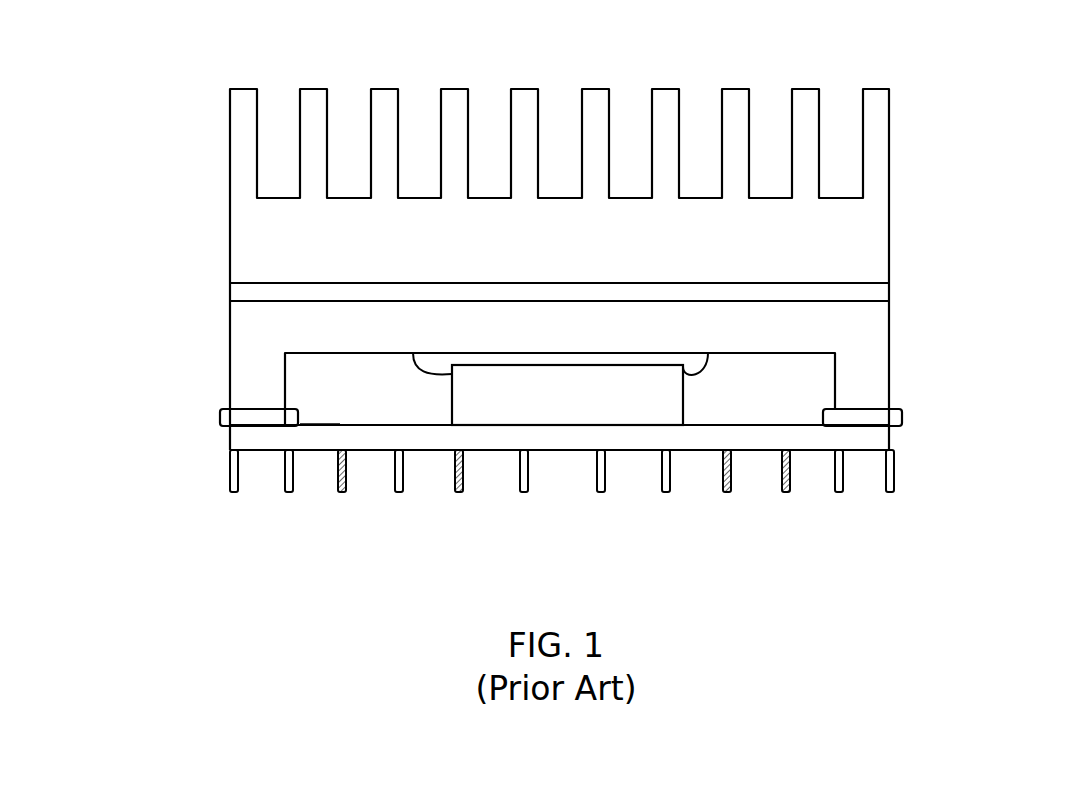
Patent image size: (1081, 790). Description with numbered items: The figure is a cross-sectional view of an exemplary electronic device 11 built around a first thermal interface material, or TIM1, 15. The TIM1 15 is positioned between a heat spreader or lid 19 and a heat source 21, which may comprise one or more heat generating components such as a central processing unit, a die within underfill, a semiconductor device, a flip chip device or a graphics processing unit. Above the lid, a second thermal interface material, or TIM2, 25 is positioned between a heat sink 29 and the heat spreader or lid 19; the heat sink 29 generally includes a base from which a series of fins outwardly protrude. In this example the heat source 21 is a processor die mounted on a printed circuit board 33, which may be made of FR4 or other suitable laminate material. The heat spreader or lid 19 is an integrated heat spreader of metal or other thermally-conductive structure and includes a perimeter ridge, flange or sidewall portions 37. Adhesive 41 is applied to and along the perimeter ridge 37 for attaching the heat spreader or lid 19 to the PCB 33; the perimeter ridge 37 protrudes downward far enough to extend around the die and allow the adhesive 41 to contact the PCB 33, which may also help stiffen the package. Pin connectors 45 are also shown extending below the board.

The electronic device 11 is at (197, 72).
The heat sink 29 is at (877, 157).
The second thermal interface material 25 is at (878, 293).
The heat spreader or lid 19 is at (877, 332).
The heat source 21 is at (565, 405).
The first thermal interface material 15 is at (578, 361).
The printed circuit board 33 is at (330, 422).
The perimeter ridge 37 is at (242, 383).
The adhesive 41 is at (227, 418).
The pin connectors 45 is at (787, 478).